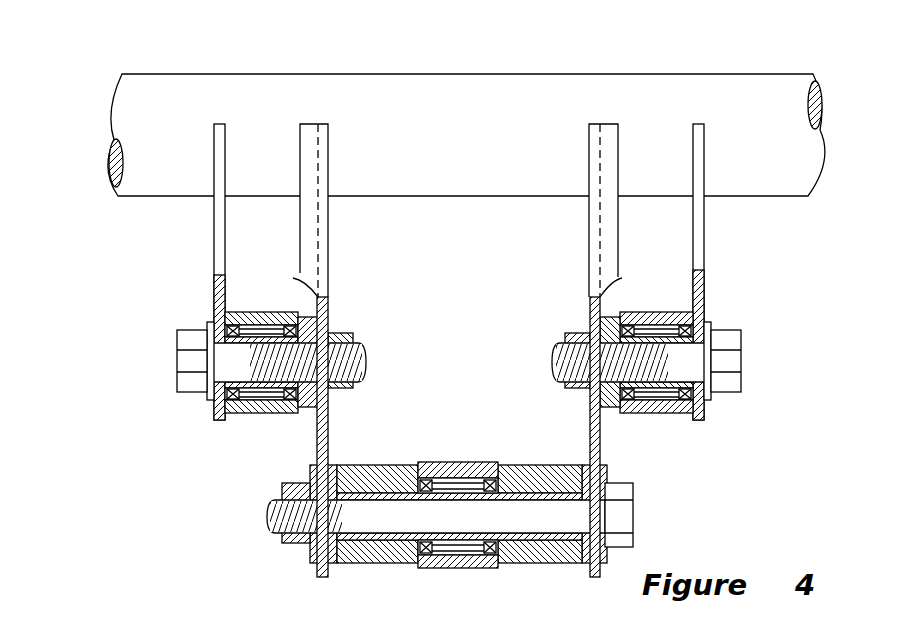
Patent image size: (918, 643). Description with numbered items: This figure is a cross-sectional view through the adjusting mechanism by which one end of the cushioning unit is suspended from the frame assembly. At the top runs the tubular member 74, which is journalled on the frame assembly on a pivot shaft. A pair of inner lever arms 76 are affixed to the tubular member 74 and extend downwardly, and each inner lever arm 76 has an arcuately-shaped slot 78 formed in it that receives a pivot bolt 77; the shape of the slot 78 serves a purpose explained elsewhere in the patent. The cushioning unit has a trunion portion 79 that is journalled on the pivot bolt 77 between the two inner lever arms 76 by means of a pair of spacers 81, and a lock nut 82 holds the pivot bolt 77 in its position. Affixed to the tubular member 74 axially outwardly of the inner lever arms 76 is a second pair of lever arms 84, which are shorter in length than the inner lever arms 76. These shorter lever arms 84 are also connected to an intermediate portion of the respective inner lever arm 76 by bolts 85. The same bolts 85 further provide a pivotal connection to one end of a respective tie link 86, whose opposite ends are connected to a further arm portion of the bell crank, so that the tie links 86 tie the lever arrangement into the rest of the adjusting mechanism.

The tubular member 74 is at (467, 73).
The inner lever arms 76 is at (325, 272).
The pivot bolt 77 is at (622, 515).
The arcuately-shaped slot 78 is at (323, 457).
The trunion portion 79 is at (467, 568).
The spacers 81 is at (375, 465).
The lock nut 82 is at (293, 543).
The second pair of lever arms 84 is at (213, 244).
The bolts 85 is at (182, 363).
The tie links 86 is at (262, 311).